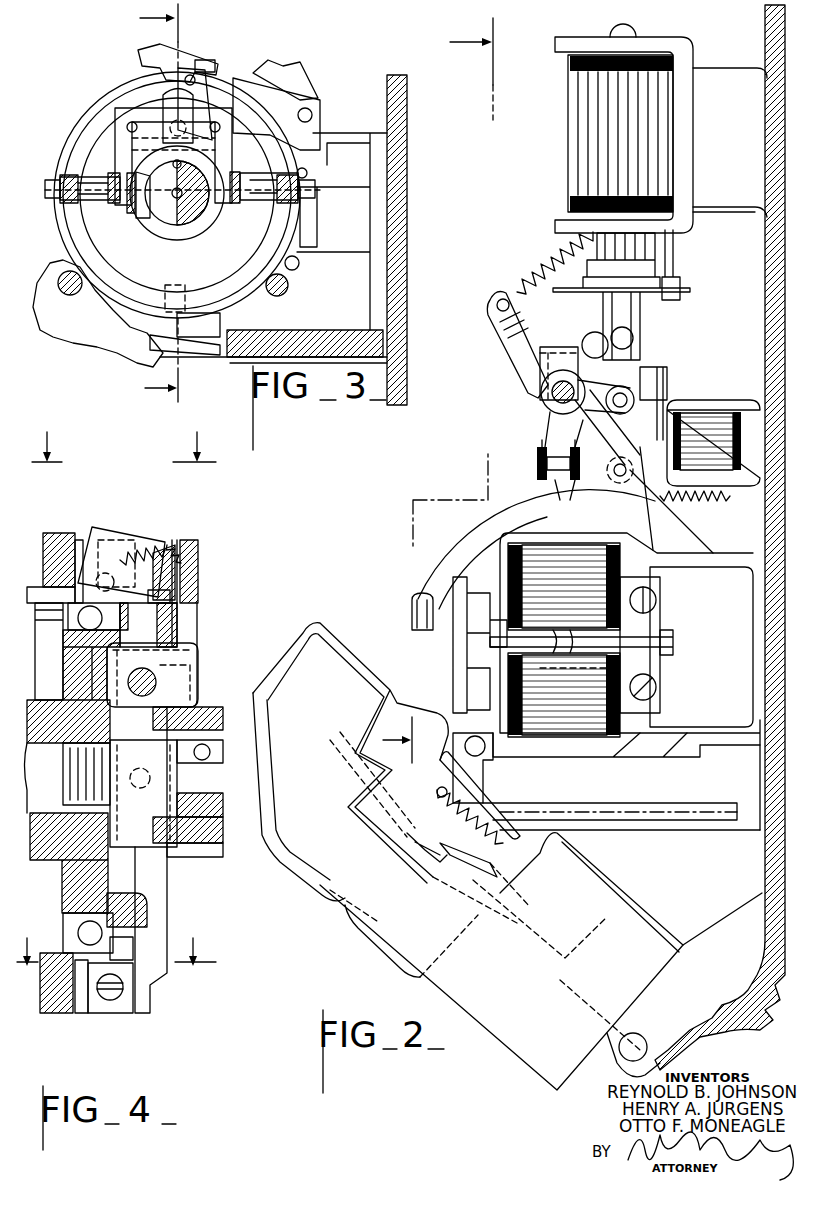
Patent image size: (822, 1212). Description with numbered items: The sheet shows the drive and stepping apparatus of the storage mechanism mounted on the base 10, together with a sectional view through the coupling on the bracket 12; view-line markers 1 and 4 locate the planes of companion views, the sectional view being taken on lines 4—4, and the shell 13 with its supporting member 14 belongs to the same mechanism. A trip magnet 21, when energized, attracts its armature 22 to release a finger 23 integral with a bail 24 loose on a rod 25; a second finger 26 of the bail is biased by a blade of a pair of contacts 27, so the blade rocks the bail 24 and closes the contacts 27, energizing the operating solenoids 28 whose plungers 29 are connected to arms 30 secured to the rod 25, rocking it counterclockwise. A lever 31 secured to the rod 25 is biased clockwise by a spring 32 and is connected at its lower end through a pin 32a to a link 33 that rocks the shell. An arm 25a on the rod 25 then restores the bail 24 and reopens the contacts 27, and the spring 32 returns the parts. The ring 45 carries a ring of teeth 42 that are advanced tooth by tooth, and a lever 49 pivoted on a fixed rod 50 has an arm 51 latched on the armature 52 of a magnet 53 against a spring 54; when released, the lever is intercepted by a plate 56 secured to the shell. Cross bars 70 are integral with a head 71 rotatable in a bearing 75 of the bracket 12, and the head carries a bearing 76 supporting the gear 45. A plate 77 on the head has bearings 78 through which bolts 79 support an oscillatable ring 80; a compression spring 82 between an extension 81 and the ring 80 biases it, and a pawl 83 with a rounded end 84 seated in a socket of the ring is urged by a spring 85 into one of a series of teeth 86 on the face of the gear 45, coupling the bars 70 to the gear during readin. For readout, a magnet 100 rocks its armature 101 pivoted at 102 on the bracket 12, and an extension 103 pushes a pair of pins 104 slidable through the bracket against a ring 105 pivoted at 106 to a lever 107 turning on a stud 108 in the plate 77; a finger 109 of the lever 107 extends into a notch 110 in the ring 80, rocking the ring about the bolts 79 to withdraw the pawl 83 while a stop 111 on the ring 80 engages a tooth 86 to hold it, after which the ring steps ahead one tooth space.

In FIG. 2, the section line 1- 1 is at (453, 391).
In FIG. 3, the section lines 4 is at (171, 207).
In FIG. 4, the cylinder or shell 13 is at (124, 463).
In FIG. 4, the member 14 is at (116, 964).
In FIG. 3, the base 10 is at (407, 110).
In FIG. 2, the base 10 is at (767, 268).
In FIG. 3, the bracket 12 is at (208, 210).
In FIG. 4, the bracket 12 is at (184, 857).
In FIG. 2, the bracket 12 is at (757, 613).
In FIG. 2, the trip magnet 21 is at (710, 450).
In FIG. 2, the armature 22 is at (668, 385).
In FIG. 2, the finger 23 is at (640, 385).
In FIG. 2, the bail 24 is at (565, 347).
In FIG. 2, the rod 25 is at (541, 392).
In FIG. 2, the arm 25a is at (590, 332).
In FIG. 2, the finger 26 is at (540, 450).
In FIG. 2, the pair of contacts 27 is at (565, 480).
In FIG. 2, the operating solenoids 28 is at (620, 118).
In FIG. 2, the plungers 29 is at (640, 315).
In FIG. 2, the arms 30 is at (622, 432).
In FIG. 2, the lever 31 is at (515, 350).
In FIG. 2, the spring 32 is at (540, 275).
In FIG. 2, the pin 32a is at (618, 484).
In FIG. 3, the link 33 is at (290, 66).
In FIG. 2, the link 33 is at (683, 532).
In FIG. 4, the teeth 42 is at (54, 532).
In FIG. 4, the ring (gear) 45 is at (40, 560).
In FIG. 3, the lever 49 is at (83, 323).
In FIG. 3, the fixed rod 50 is at (63, 268).
In FIG. 2, the fixed rod 50 is at (480, 756).
In FIG. 2, the arm 51 is at (437, 793).
In FIG. 2, the armature 52 is at (420, 858).
In FIG. 2, the magnet 53 is at (300, 890).
In FIG. 2, the spring 54 is at (450, 825).
In FIG. 3, the plate 56 is at (182, 340).
In FIG. 4, the cross bars 70 is at (63, 765).
In FIG. 4, the head 71 is at (63, 900).
In FIG. 3, the bearing 75 is at (195, 218).
In FIG. 4, the bearing 75 is at (222, 800).
In FIG. 4, the bearing 76 is at (133, 948).
In FIG. 3, the plate 77 is at (235, 132).
In FIG. 4, the plate 77 is at (112, 893).
In FIG. 3, the bearings 78 is at (84, 180).
In FIG. 3, the bolts 79 is at (48, 191).
In FIG. 3, the ring 80 is at (240, 88).
In FIG. 4, the ring 80 is at (178, 588).
In FIG. 3, the extension 81 is at (195, 78).
In FIG. 4, the extension 81 is at (197, 546).
In FIG. 3, the compression spring 82 is at (202, 62).
In FIG. 4, the compression spring 82 is at (174, 543).
In FIG. 4, the pawl 83 is at (100, 528).
In FIG. 4, the rounded end 84 is at (153, 545).
In FIG. 4, the spring 85 is at (120, 545).
In FIG. 4, the teeth 86 is at (79, 540).
In FIG. 2, the magnet 100 is at (564, 640).
In FIG. 2, the armature 101 is at (425, 593).
In FIG. 2, the pivot 102 is at (455, 633).
In FIG. 2, the extension 103 is at (553, 680).
In FIG. 3, the pins 104 is at (177, 226).
In FIG. 4, the pins 104 is at (200, 710).
In FIG. 2, the pins 104 is at (630, 647).
In FIG. 3, the ring 105 is at (131, 205).
In FIG. 4, the ring 105 is at (150, 848).
In FIG. 3, the pivot 106 is at (142, 220).
In FIG. 4, the pivot 106 is at (222, 752).
In FIG. 3, the lever 107 is at (120, 130).
In FIG. 4, the lever 107 is at (170, 690).
In FIG. 3, the stud 108 is at (165, 110).
In FIG. 4, the stud 108 is at (156, 676).
In FIG. 3, the finger 109 is at (148, 52).
In FIG. 4, the finger 109 is at (148, 625).
In FIG. 4, the notch 110 is at (168, 598).
In FIG. 3, the stop 111 is at (176, 286).
In FIG. 4, the stop 111 is at (118, 1010).